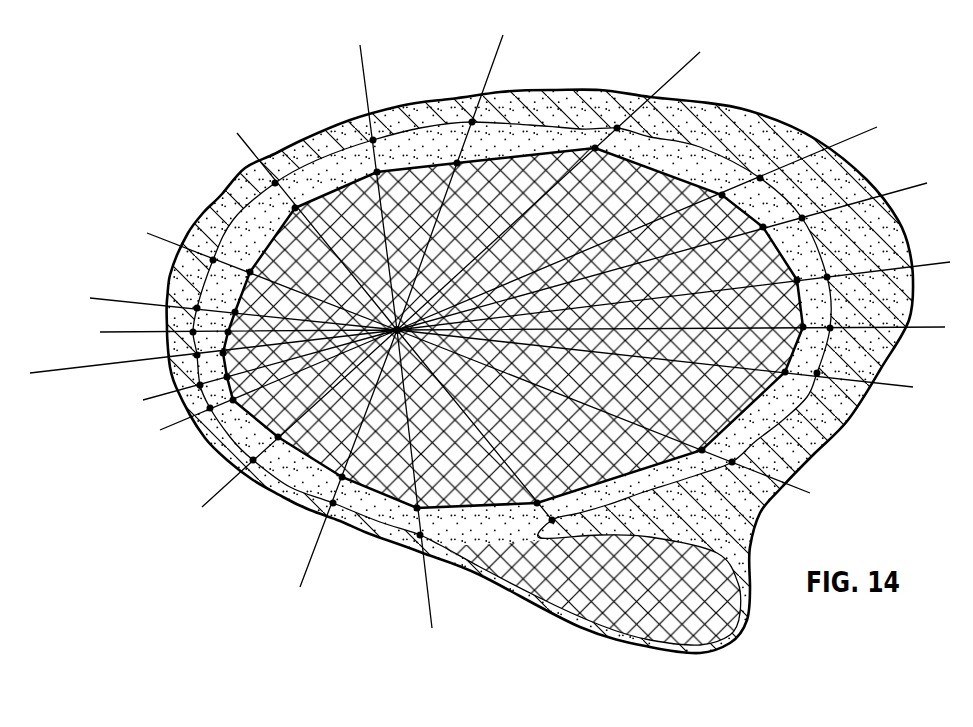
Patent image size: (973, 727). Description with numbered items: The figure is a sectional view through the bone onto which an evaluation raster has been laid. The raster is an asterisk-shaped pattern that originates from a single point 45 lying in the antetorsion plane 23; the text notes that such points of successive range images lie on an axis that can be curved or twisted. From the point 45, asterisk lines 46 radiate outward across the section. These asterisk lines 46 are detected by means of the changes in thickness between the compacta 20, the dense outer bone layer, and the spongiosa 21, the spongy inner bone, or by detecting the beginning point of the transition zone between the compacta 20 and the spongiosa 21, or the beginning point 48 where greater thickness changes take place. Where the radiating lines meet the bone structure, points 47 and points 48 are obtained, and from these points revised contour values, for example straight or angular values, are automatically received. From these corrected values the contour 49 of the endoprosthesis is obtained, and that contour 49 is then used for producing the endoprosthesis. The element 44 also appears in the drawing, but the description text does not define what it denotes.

The compacta 20 is at (770, 140).
The spongiosa 21 is at (612, 217).
The antetorsion plane 23 is at (92, 368).
The stippled intermediate layer 44 is at (320, 170).
The point 45 is at (403, 323).
The asterisk lines 46 is at (660, 83).
The points 47 is at (255, 272).
The beginning point 48 is at (273, 182).
The contour 49 is at (230, 450).